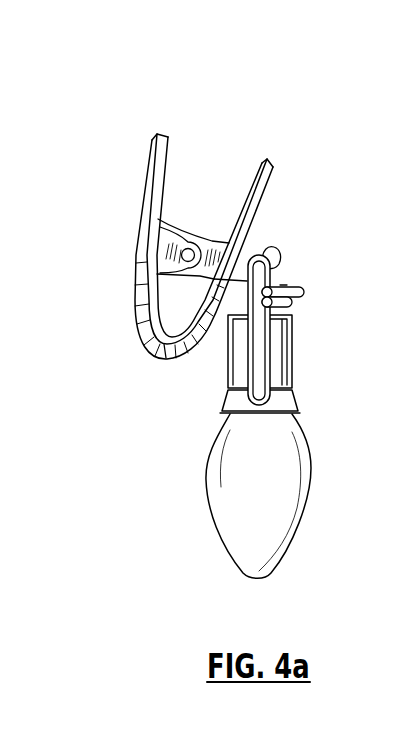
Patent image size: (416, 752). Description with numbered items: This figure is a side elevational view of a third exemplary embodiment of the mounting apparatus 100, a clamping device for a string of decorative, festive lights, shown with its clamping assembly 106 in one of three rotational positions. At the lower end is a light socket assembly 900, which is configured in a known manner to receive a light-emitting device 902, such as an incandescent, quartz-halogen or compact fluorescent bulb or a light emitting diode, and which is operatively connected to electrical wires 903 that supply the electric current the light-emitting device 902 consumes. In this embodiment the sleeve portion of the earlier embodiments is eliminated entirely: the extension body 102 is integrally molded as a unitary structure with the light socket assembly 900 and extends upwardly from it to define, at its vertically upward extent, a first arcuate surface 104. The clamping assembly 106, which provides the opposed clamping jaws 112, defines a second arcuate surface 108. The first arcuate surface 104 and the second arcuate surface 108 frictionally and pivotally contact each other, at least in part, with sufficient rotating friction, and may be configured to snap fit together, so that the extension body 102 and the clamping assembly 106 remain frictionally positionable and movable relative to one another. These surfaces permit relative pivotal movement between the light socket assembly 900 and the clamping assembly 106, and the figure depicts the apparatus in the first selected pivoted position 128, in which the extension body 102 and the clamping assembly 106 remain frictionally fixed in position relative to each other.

The apparatus 100 is at (76, 311).
The extension body 102 is at (247, 283).
The first arcuate surface 104 is at (250, 253).
The clamping assembly 106 is at (176, 247).
The second arcuate surface 108 is at (276, 268).
The opposed clamping jaws 112 is at (143, 338).
The first selected pivoted position 128 is at (140, 110).
The light socket assembly 900 is at (279, 381).
The light-emitting device 902 is at (277, 532).
The electrical wires 903 is at (303, 292).